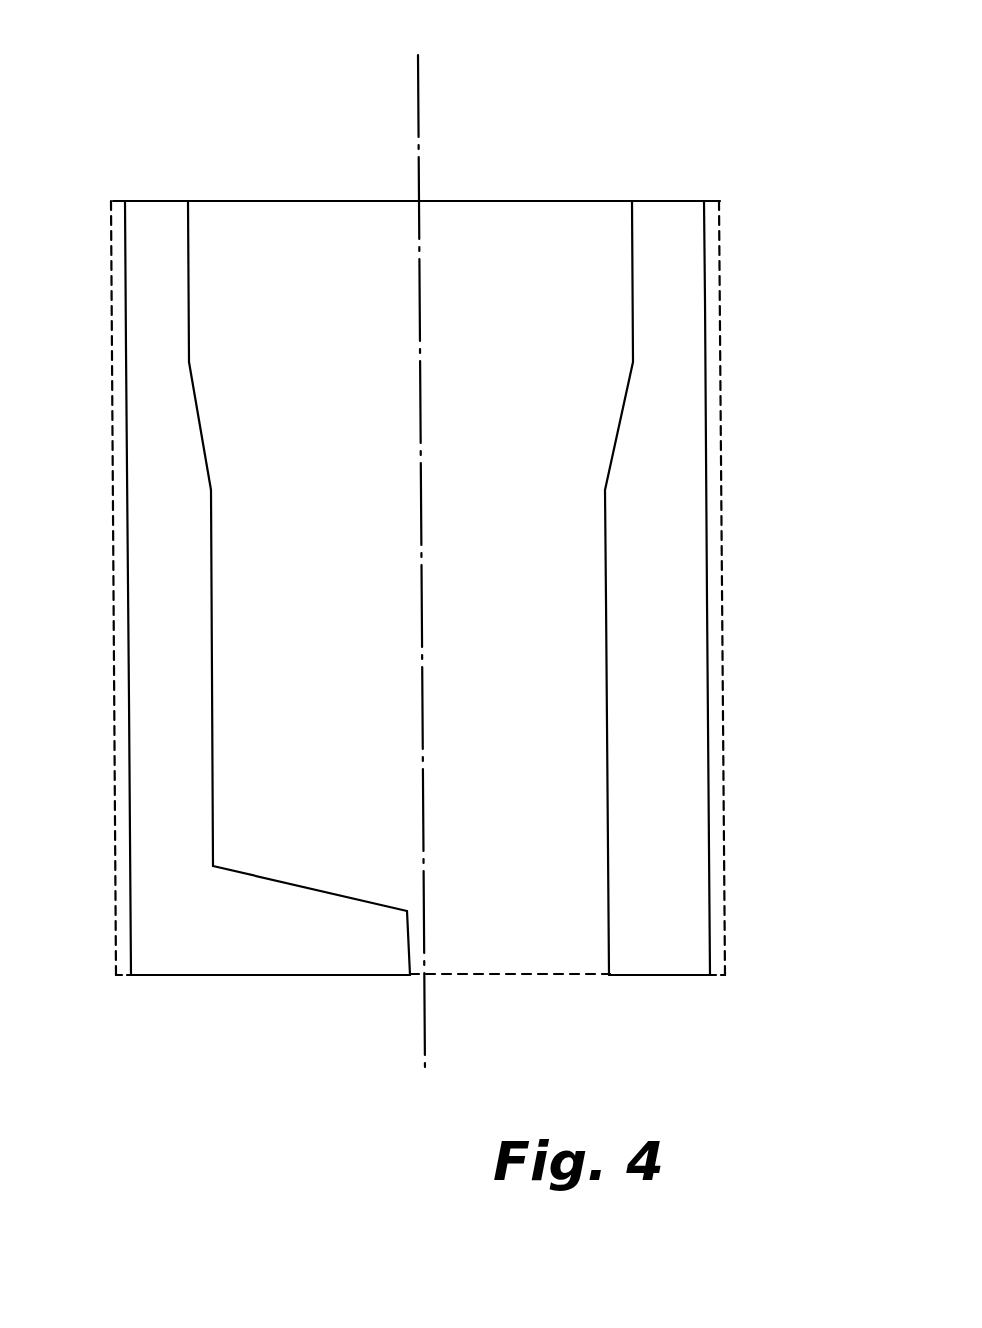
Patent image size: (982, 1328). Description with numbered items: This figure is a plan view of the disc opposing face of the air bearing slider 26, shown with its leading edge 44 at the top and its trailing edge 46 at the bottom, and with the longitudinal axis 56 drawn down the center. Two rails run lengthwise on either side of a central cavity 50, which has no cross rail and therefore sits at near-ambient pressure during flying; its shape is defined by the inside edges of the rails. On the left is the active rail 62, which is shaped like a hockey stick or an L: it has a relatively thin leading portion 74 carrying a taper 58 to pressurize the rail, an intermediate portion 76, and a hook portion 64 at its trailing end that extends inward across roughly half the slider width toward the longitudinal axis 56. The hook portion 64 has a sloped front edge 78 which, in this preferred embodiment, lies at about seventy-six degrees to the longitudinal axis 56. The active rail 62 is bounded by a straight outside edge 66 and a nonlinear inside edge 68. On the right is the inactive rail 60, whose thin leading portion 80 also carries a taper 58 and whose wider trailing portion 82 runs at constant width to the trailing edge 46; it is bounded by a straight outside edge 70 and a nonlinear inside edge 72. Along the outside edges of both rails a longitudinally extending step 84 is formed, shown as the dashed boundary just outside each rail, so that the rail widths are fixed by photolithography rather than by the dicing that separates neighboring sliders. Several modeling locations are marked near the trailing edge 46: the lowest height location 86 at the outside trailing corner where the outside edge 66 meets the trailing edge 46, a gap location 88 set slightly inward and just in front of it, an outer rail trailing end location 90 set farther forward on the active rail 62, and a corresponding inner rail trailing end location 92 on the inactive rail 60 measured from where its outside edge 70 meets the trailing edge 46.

The slider 26 is at (730, 122).
The leading edge 44 is at (446, 201).
The trailing edge 46 is at (523, 974).
The central cavity 50 is at (524, 215).
The longitudinal axis 56 is at (421, 88).
The taper 58 is at (165, 220).
The inactive rail 60 is at (674, 647).
The active rail 62 is at (152, 661).
The hook portion 64 is at (317, 948).
The outside edge 66 is at (125, 440).
The inside edge 68 is at (210, 548).
The outside edge 70 is at (707, 532).
The inside edge 72 is at (595, 548).
The leading portion 74 is at (147, 277).
The intermediate portion 76 is at (168, 743).
The front edge 78 is at (308, 885).
The leading portion 80 is at (675, 242).
The trailing portion 82 is at (682, 768).
The longitudinally extending step 84 is at (118, 567).
The lowest height location 86 is at (133, 978).
The gap location 88 is at (178, 965).
The outer rail trailing end location 90 is at (193, 948).
The inner rail trailing end location 92 is at (649, 940).